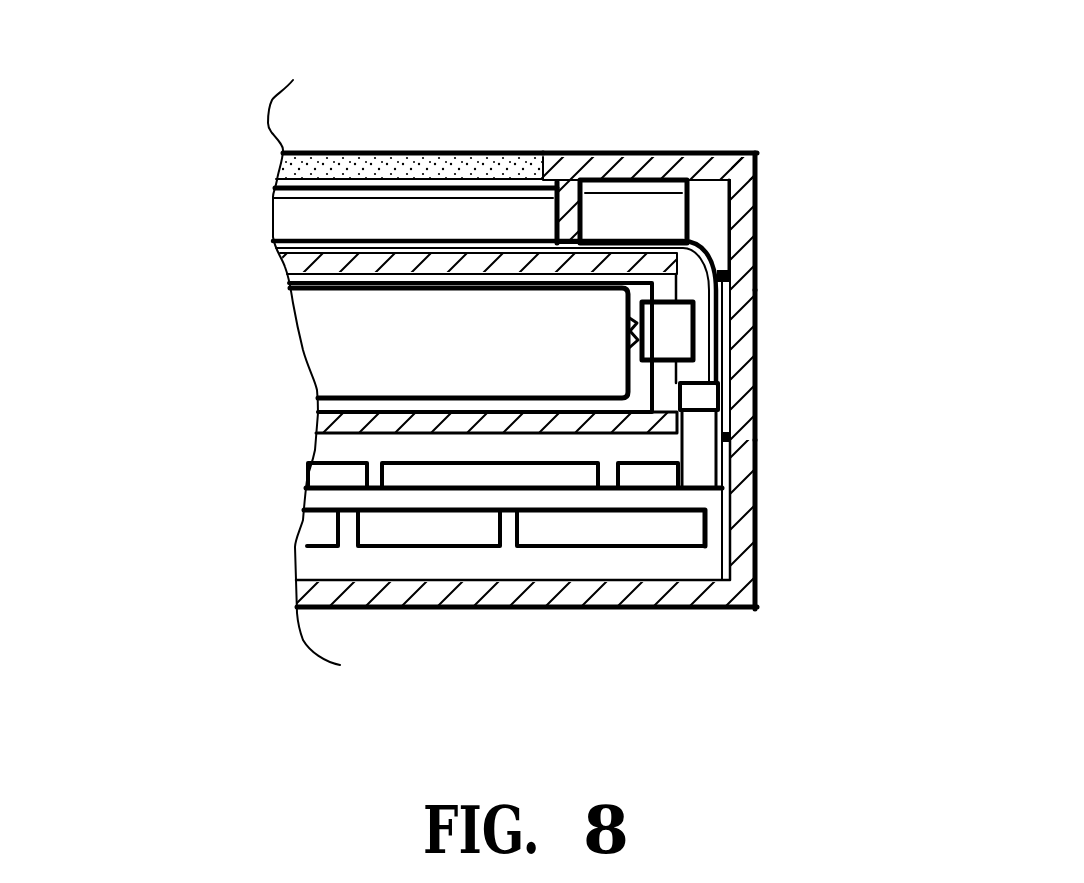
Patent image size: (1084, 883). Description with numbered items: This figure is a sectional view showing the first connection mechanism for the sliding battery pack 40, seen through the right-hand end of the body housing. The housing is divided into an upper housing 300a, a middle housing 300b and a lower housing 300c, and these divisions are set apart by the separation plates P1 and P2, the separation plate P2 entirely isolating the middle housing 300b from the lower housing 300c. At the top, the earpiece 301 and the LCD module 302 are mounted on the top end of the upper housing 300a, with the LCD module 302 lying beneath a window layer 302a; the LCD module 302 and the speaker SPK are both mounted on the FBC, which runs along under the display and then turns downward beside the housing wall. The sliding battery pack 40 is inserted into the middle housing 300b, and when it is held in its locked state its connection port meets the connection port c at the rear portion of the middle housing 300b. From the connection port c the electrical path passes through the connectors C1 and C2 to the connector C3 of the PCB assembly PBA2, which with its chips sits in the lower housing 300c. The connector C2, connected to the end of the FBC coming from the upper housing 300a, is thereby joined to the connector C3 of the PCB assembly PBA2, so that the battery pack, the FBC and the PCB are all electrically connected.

The earpiece 301 is at (634, 152).
The upper housing 300a is at (755, 195).
The middle housing 300b is at (757, 337).
The lower housing 300c is at (758, 515).
The LCD module 302 is at (463, 212).
The display window 302a is at (502, 157).
The speaker SPK is at (653, 205).
The element FBC is at (757, 247).
The separation plate P1 is at (303, 263).
The sliding battery pack 40 is at (363, 332).
The connection port c is at (628, 346).
The connector C1 is at (670, 337).
The connector C2 is at (710, 397).
The connector C3 is at (698, 465).
The separation plate P2 is at (335, 418).
The PCB assembly PBA2 is at (284, 509).